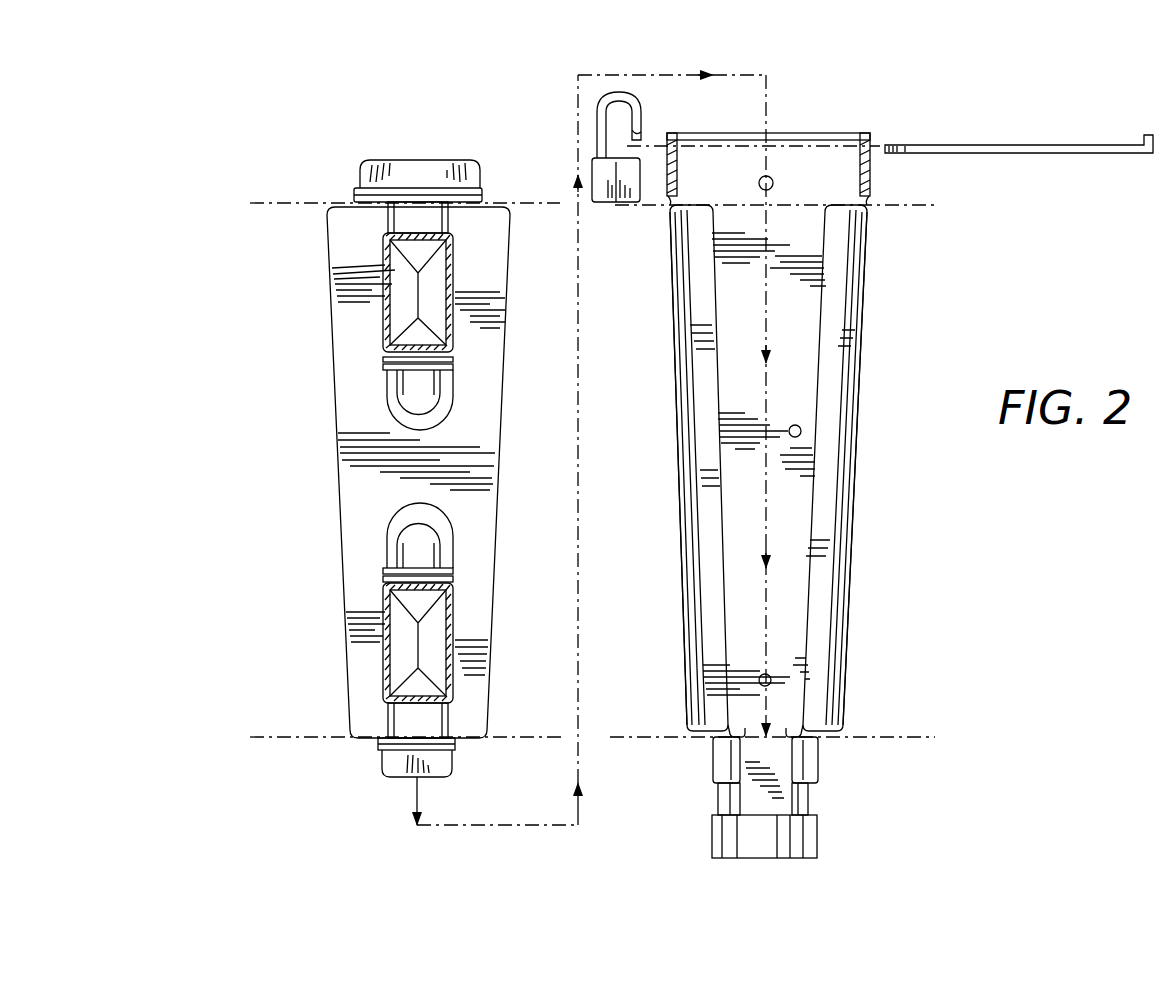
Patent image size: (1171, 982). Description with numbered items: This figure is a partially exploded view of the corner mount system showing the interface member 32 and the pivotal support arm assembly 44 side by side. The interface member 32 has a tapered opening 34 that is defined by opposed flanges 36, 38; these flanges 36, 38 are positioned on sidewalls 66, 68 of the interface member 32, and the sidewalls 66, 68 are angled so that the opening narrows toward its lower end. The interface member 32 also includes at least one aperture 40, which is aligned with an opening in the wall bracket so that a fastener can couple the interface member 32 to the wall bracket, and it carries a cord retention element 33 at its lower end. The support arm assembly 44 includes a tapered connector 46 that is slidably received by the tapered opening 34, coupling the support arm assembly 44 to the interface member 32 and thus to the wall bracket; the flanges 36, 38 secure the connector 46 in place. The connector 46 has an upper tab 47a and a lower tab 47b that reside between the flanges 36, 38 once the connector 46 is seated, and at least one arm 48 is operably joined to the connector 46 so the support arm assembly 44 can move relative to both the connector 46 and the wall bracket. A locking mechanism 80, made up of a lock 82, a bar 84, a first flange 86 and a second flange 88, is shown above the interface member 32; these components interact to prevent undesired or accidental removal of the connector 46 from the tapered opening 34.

The interface member 32 is at (838, 142).
The cord retention element 33 is at (797, 840).
The tapered opening 34 is at (787, 483).
The flange 36 is at (835, 300).
The flange 38 is at (705, 305).
The aperture 40 is at (801, 430).
The pivotal support arm assembly 44 is at (250, 395).
The tapered connector 46 is at (347, 472).
The upper tab 47a is at (370, 177).
The lower tab 47b is at (400, 765).
The arm 48 is at (402, 287).
The sidewall 66 is at (868, 242).
The sidewall 68 is at (671, 234).
The locking mechanism 80 is at (652, 92).
The lock 82 is at (602, 175).
The bar 84 is at (1013, 147).
The first flange 86 is at (868, 171).
The second flange 88 is at (679, 133).